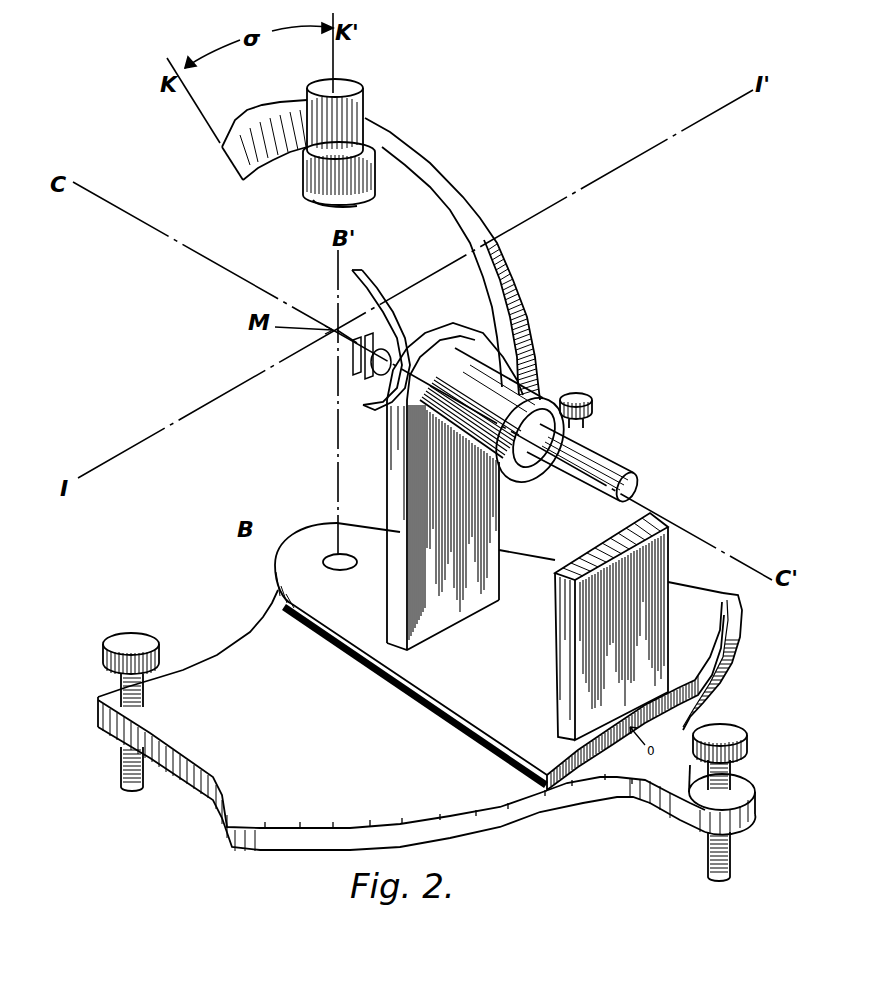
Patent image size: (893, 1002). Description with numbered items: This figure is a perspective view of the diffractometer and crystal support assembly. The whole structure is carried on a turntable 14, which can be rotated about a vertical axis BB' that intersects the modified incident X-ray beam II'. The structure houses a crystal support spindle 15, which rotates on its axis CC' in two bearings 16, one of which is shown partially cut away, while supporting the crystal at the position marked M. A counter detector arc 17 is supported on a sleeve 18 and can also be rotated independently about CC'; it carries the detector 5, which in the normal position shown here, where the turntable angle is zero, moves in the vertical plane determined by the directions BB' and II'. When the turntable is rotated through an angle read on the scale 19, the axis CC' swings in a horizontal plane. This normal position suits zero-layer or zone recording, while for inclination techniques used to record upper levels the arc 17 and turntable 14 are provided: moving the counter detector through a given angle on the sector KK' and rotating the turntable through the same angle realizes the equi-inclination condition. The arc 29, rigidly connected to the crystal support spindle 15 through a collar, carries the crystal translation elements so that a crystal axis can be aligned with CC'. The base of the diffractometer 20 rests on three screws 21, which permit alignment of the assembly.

The detector 5 is at (366, 108).
The turntable 14 is at (337, 560).
The crystal support spindle 15 is at (633, 465).
The bearings 16 is at (390, 455).
The counter detector arc 17 is at (500, 262).
The sleeve 18 is at (548, 385).
The scale 19 is at (480, 800).
The base of the diffractometer 20 is at (188, 758).
The screws 21 is at (120, 633).
The arc 29 is at (372, 275).